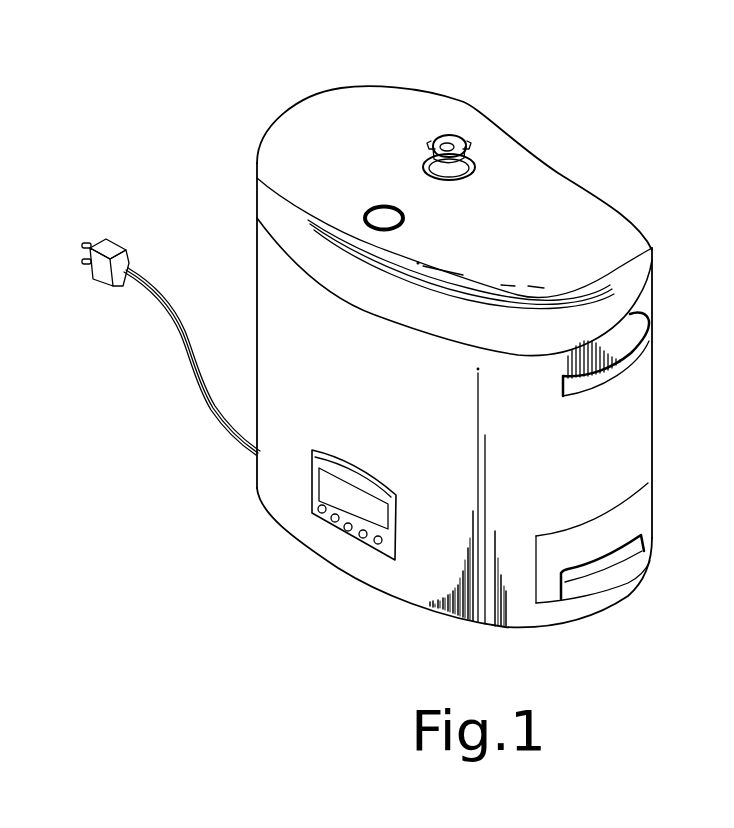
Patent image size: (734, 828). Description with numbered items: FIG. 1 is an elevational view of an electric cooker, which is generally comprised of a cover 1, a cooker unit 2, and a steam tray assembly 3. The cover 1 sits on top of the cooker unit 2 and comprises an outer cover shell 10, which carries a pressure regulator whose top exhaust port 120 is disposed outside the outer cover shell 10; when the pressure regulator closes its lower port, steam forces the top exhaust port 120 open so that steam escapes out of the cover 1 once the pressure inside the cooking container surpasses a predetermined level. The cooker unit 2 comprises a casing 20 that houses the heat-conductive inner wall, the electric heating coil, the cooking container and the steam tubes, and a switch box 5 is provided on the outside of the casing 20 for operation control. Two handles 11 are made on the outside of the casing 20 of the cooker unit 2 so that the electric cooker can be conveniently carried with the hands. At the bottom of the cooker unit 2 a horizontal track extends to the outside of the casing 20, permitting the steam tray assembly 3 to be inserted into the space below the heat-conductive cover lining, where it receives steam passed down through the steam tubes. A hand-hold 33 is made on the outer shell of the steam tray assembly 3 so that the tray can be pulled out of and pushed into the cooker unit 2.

The cover 1 is at (596, 157).
The outer cover shell 10 is at (654, 253).
The top exhaust port 120 is at (461, 140).
The handles 11 is at (651, 331).
The cooker unit 2 is at (667, 409).
The casing 20 is at (273, 315).
The steam tray assembly 3 is at (671, 513).
The hand-hold 33 is at (603, 575).
The switch box 5 is at (352, 540).